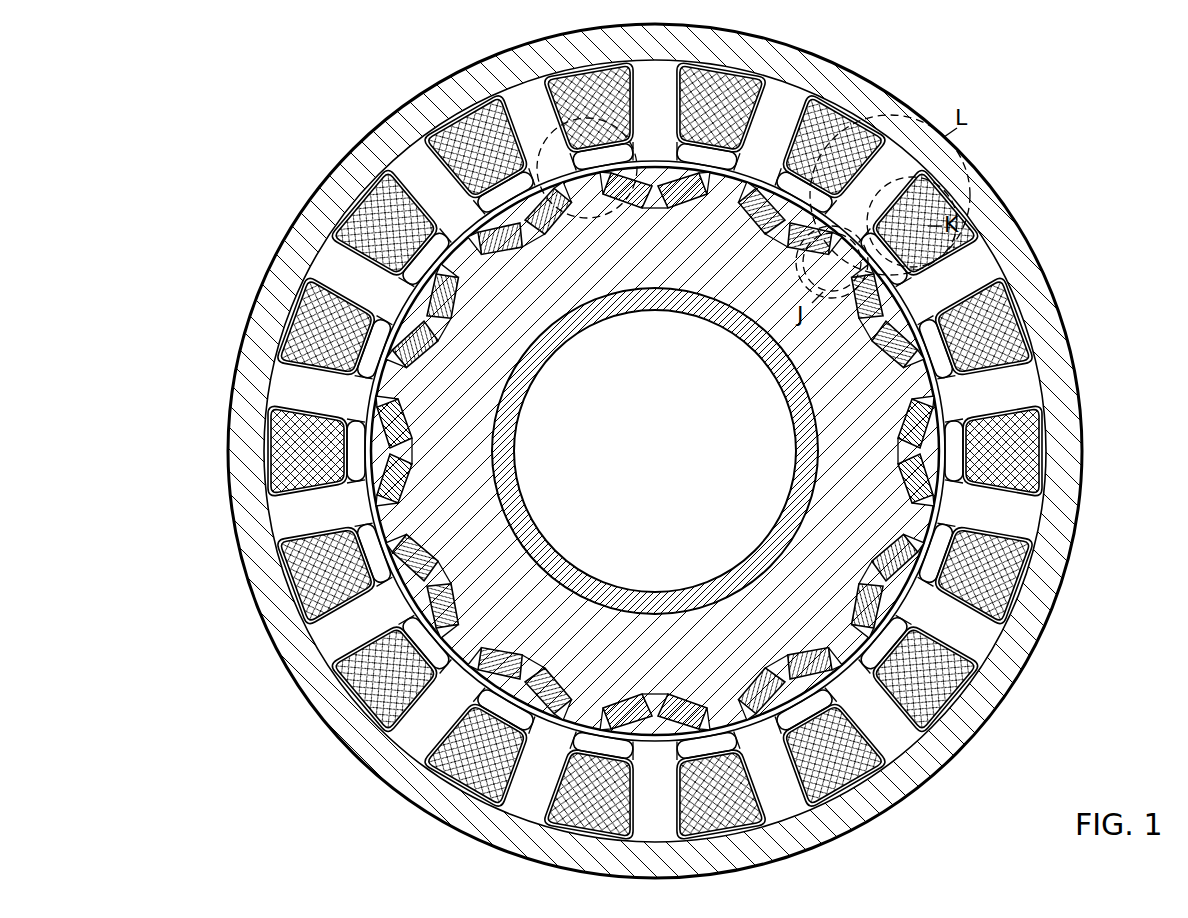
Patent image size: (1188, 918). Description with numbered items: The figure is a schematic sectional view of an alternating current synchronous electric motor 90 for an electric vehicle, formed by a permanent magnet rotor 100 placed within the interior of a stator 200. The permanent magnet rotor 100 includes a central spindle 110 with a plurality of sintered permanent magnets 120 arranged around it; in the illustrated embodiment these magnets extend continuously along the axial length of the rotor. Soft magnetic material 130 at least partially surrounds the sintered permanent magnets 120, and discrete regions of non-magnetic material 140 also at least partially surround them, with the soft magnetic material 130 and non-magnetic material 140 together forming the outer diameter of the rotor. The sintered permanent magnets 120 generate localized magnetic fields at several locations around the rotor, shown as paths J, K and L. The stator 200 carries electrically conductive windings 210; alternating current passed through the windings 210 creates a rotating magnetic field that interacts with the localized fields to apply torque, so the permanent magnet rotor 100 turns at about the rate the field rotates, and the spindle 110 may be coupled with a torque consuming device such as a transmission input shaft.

The alternating current synchronous electric motor 90 is at (633, 451).
The permanent magnet rotor 100 is at (613, 451).
The spindle 110 is at (802, 458).
The sintered permanent magnets 120 is at (903, 428).
The soft magnetic material 130 is at (595, 742).
The discrete regions of non-magnetic material 140 is at (867, 573).
The stator 200 is at (633, 451).
The windings 210 is at (457, 128).